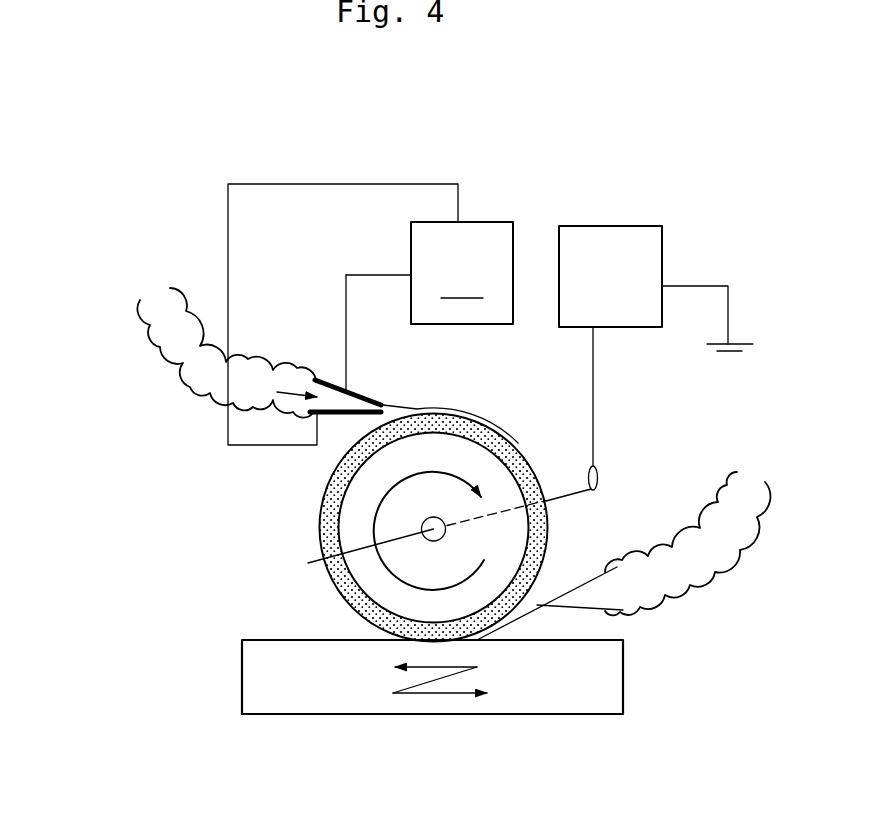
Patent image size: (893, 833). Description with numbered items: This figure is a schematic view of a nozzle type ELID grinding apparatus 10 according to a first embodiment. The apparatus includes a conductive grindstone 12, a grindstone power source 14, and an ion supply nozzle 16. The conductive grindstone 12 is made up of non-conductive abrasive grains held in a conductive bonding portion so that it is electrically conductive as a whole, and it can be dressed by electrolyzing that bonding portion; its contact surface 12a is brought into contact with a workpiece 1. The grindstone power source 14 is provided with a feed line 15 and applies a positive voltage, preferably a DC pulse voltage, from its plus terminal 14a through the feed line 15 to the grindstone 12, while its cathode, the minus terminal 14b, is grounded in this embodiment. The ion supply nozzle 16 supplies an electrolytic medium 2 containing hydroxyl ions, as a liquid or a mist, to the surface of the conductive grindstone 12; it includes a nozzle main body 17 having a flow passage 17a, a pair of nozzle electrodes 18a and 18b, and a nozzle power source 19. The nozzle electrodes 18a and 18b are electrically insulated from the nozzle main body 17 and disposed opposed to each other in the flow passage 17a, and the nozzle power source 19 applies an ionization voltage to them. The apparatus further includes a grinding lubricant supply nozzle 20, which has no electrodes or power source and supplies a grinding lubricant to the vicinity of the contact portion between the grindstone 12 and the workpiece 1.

The workpiece 1 is at (339, 692).
The electrolytic medium 2 is at (175, 338).
The nozzle type ELID grinding apparatus 10 is at (148, 218).
The conductive grindstone 12 is at (317, 522).
The contact surface 12a is at (360, 622).
The grindstone power source 14 is at (585, 218).
The plus terminal 14a is at (597, 330).
The minus terminal 14b is at (663, 283).
The feed line 15 is at (595, 445).
The ion supply nozzle 16 is at (187, 403).
The nozzle main body 17 is at (157, 340).
The flow passage 17a is at (173, 355).
The nozzle electrode 18a is at (363, 397).
The nozzle electrode 18b is at (330, 416).
The nozzle power source 19 is at (370, 314).
The grinding lubricant supply nozzle 20 is at (706, 599).